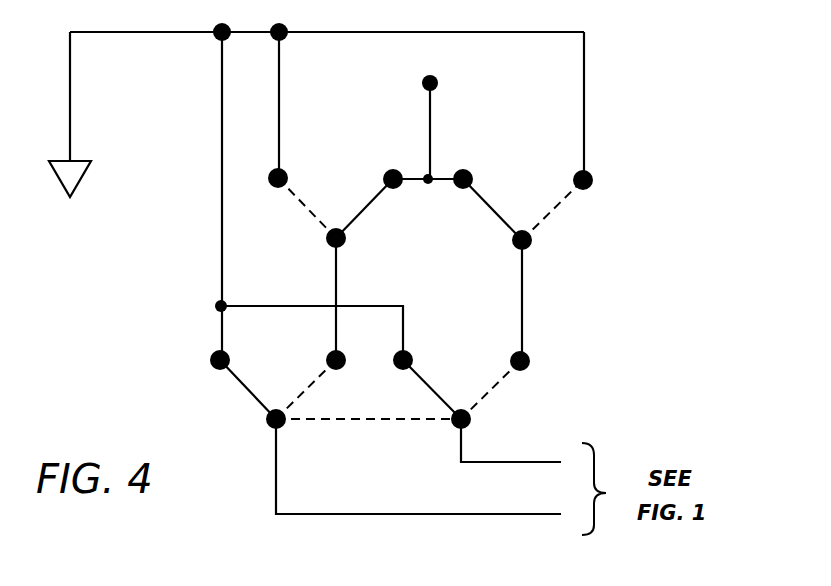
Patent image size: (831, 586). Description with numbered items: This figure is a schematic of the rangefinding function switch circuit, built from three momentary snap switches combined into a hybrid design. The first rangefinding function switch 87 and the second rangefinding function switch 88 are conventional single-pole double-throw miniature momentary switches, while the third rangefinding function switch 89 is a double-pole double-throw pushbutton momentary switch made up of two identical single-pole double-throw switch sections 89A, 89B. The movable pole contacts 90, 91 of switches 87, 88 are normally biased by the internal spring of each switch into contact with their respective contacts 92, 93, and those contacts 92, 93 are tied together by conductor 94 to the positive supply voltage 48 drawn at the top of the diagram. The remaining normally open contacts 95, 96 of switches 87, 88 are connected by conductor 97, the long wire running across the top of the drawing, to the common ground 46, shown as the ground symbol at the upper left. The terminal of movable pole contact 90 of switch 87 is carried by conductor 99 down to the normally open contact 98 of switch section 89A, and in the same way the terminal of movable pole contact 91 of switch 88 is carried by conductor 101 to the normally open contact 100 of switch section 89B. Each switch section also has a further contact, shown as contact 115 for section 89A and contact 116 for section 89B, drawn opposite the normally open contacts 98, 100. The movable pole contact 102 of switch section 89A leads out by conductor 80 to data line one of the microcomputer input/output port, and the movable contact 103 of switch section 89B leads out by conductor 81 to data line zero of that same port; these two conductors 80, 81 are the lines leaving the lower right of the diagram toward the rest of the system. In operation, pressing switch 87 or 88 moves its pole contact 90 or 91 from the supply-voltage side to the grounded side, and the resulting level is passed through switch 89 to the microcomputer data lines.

The common ground 46 is at (66, 158).
The positive supply voltage 48 is at (448, 66).
The conductor 80 is at (300, 513).
The conductor 81 is at (460, 462).
The rangefinding function switch 87 is at (292, 236).
The rangefinding function switch 88 is at (487, 237).
The rangefinding function switch 89 is at (368, 404).
The switch section 89A is at (185, 397).
The switch section 89B is at (611, 414).
The movable pole contact 90 is at (345, 243).
The movable pole contact 91 is at (532, 243).
The contact 92 is at (391, 168).
The contact 93 is at (476, 159).
The conductor 94 is at (431, 120).
The normally open contact 95 is at (284, 170).
The normally open contact 96 is at (573, 170).
The conductor 97 is at (472, 33).
The normally open contact 98 is at (326, 355).
The conductor 99 is at (337, 280).
The normally open contact 100 is at (528, 355).
The conductor 101 is at (541, 278).
The movable pole contact 102 is at (266, 424).
The movable contact 103 is at (470, 424).
The switch contact 115 is at (210, 354).
The switch contact 116 is at (411, 354).